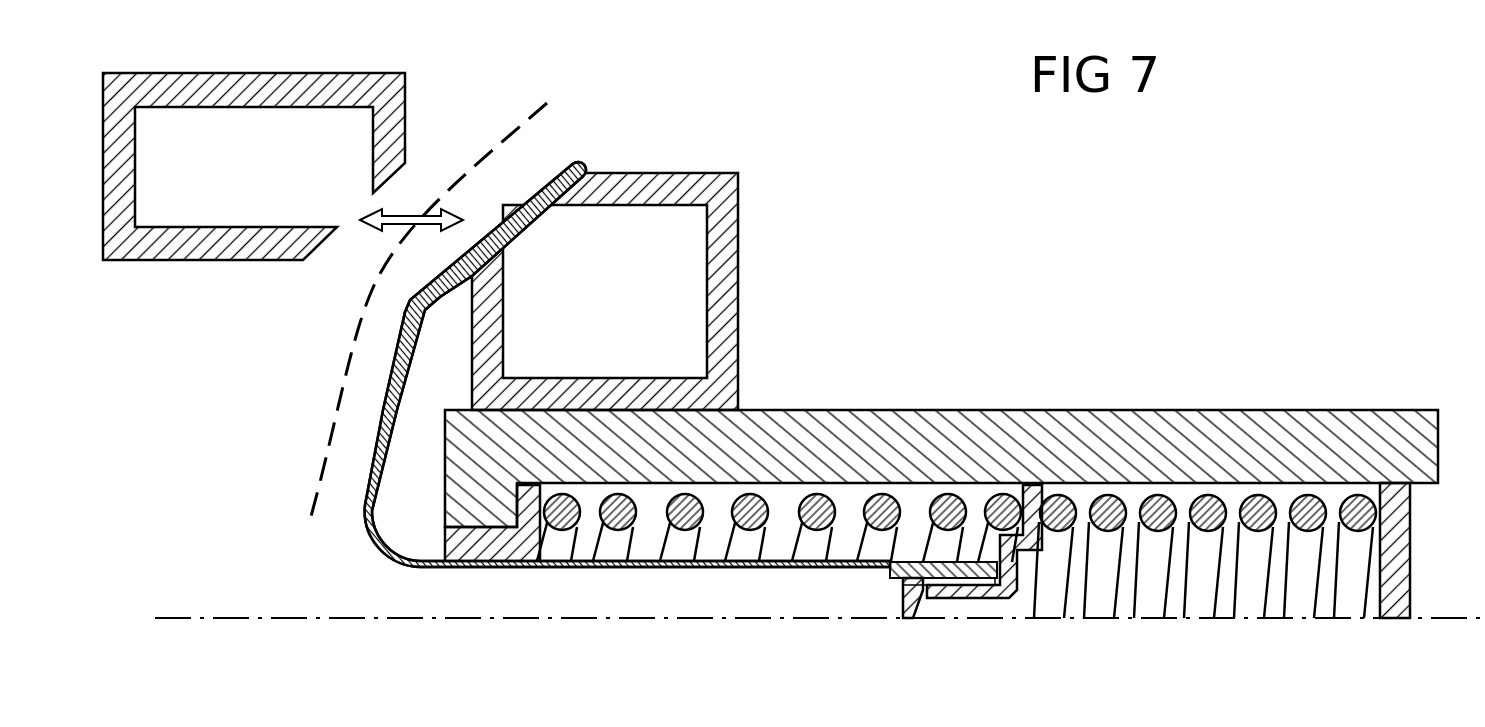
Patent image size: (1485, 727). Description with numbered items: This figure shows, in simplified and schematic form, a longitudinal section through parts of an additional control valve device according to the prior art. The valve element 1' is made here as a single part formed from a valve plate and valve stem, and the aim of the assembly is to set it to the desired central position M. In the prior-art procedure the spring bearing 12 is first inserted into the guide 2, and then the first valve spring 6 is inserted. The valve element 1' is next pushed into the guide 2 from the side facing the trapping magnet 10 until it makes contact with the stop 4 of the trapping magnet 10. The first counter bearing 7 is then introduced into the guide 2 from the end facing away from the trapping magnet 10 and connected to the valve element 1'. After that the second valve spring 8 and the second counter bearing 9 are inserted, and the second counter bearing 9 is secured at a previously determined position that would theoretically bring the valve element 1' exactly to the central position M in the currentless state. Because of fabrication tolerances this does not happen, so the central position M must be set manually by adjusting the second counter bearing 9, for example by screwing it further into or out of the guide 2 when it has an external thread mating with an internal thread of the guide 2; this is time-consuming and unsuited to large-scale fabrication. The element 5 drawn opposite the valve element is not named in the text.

The valve element 1' is at (627, 364).
The guide 2 is at (982, 427).
The stop 4 is at (627, 327).
The counter piece 5 is at (200, 242).
The first valve spring 6 is at (815, 560).
The first counter bearing 7 is at (975, 593).
The second valve spring 8 is at (1210, 553).
The second counter bearing 9 is at (1393, 553).
The trapping magnet 10 is at (693, 288).
The spring bearing 12 is at (493, 550).
The central position M is at (343, 375).